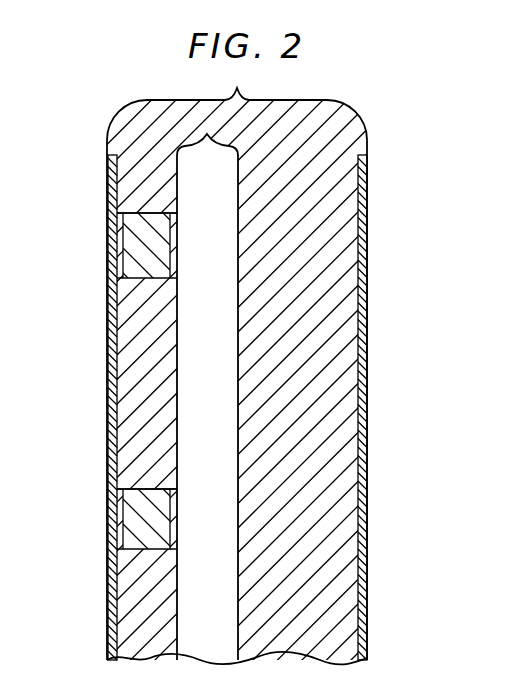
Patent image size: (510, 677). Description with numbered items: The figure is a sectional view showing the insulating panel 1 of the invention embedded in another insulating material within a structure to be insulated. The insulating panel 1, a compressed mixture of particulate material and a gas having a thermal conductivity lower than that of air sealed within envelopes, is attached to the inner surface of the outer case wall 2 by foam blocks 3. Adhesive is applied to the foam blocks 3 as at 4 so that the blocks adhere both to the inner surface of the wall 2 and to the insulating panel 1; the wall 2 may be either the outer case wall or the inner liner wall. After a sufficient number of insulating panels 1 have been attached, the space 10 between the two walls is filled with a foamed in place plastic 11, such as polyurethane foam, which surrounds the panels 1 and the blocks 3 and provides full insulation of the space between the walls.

The insulating panel 1 is at (214, 236).
The outer case wall 2 is at (108, 373).
The foam blocks 3 is at (150, 281).
The adhesive 4 is at (167, 212).
The space 10 is at (237, 362).
The foamed in place plastic 11 is at (345, 334).